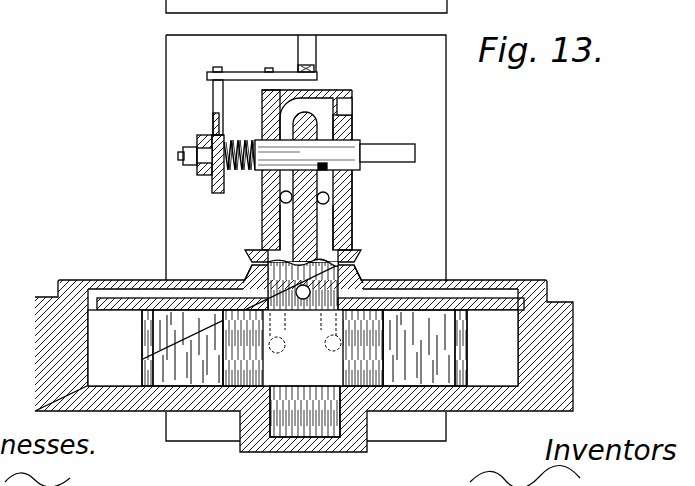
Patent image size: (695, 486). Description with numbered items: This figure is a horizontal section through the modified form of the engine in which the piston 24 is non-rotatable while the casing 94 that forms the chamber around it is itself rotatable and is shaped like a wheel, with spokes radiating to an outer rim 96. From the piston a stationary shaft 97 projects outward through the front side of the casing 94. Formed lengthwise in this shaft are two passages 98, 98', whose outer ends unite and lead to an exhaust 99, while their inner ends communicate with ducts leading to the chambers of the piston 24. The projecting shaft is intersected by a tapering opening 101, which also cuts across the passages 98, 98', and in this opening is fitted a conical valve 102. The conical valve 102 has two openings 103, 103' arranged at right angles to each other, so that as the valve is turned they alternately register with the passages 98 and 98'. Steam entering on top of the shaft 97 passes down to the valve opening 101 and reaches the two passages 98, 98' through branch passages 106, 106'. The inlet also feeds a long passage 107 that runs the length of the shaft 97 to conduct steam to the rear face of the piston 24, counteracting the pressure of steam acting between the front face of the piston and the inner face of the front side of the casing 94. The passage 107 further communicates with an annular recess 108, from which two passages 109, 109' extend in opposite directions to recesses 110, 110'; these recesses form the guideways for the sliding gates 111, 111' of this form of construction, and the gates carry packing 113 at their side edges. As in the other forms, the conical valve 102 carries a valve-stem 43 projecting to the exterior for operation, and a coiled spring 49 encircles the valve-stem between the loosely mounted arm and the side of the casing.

The rotary piston 24 is at (303, 322).
The valve-stem 43 is at (183, 160).
The coiled spring 49 is at (246, 173).
The casing 94 is at (497, 307).
The outer rim 96 is at (575, 327).
The stationary shaft 97 is at (300, 425).
The longitudinal passage 98 is at (261, 227).
The longitudinal passage 98' is at (350, 201).
The exhaust 99 is at (350, 113).
The tapering opening 101 is at (353, 187).
The conical valve 102 is at (358, 141).
The valve opening 103 is at (385, 170).
The valve opening 103' is at (289, 170).
The branch passage 106 is at (249, 204).
The branch passage 106' is at (367, 227).
The long passage 107 is at (303, 299).
The annular recess 108 is at (247, 277).
The passage 109 is at (182, 282).
The passage 109' is at (431, 281).
The recess 110 is at (117, 369).
The recess 110' is at (495, 375).
The sliding gate 111 is at (188, 348).
The sliding gate 111' is at (419, 348).
The packing 113 is at (150, 342).